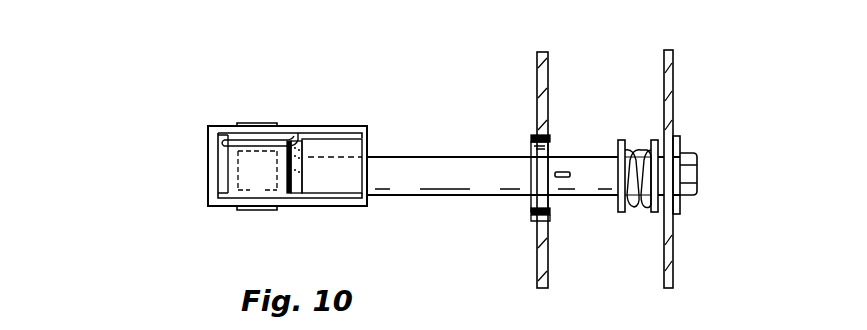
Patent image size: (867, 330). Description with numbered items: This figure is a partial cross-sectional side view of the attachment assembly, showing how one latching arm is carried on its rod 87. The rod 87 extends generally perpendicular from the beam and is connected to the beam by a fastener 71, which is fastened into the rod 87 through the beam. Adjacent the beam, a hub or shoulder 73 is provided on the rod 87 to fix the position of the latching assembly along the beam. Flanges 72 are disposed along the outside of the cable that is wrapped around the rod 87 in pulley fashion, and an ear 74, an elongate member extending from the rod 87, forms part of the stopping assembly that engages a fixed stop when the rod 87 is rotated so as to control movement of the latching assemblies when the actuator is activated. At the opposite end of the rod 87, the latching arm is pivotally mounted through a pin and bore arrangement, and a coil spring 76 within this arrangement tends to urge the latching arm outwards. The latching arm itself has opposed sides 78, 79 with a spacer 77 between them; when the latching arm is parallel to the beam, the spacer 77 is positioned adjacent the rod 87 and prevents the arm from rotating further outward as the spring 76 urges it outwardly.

The fastener 71 is at (681, 157).
The flanges 72 is at (620, 141).
The hub or shoulder 73 is at (532, 142).
The ear 74 is at (560, 171).
The spring 76 is at (294, 132).
The spacer 77 is at (358, 140).
The side 78 is at (337, 207).
The side 79 is at (212, 127).
The rod 87 is at (425, 172).